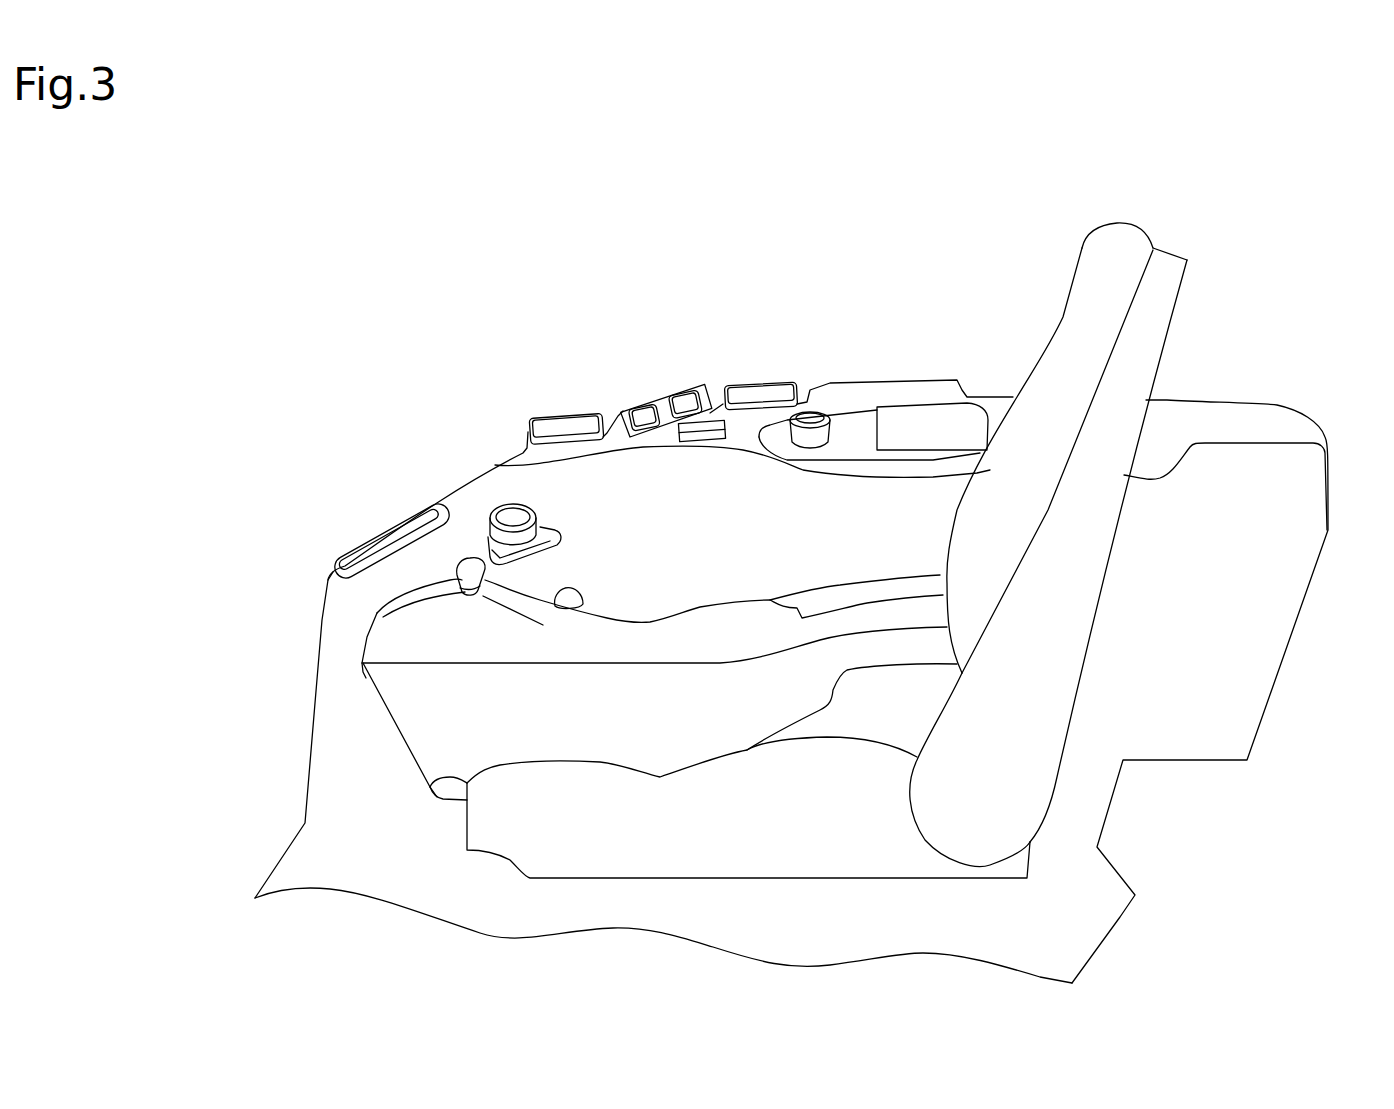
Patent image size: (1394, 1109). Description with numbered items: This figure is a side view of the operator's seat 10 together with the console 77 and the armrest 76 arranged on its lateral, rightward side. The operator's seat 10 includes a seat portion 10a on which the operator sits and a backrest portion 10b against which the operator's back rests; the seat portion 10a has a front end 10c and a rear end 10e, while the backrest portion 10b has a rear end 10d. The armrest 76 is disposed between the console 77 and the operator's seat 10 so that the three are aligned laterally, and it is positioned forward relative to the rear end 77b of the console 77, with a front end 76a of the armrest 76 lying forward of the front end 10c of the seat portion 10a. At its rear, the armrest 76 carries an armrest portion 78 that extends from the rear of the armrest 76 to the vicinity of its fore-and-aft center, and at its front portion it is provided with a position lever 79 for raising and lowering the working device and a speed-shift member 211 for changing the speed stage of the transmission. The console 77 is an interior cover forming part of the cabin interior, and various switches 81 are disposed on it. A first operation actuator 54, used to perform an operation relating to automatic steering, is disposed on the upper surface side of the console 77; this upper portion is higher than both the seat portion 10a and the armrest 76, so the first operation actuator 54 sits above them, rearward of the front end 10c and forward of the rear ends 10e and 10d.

The operator's seat 10 is at (826, 585).
The seat portion 10a is at (633, 862).
The backrest portion 10b is at (1087, 315).
The front end 10c is at (460, 785).
The rear end 10d is at (1190, 262).
The rear end 10e is at (902, 740).
The first operation actuator 54 is at (703, 434).
The armrest 76 is at (344, 668).
The front end 76a is at (363, 670).
The console 77 is at (468, 449).
The rear end 77b is at (1328, 467).
The armrest portion 78 is at (841, 587).
The position lever 79 is at (567, 590).
The switches 81 is at (660, 375).
The speed-shift member 211 is at (470, 560).